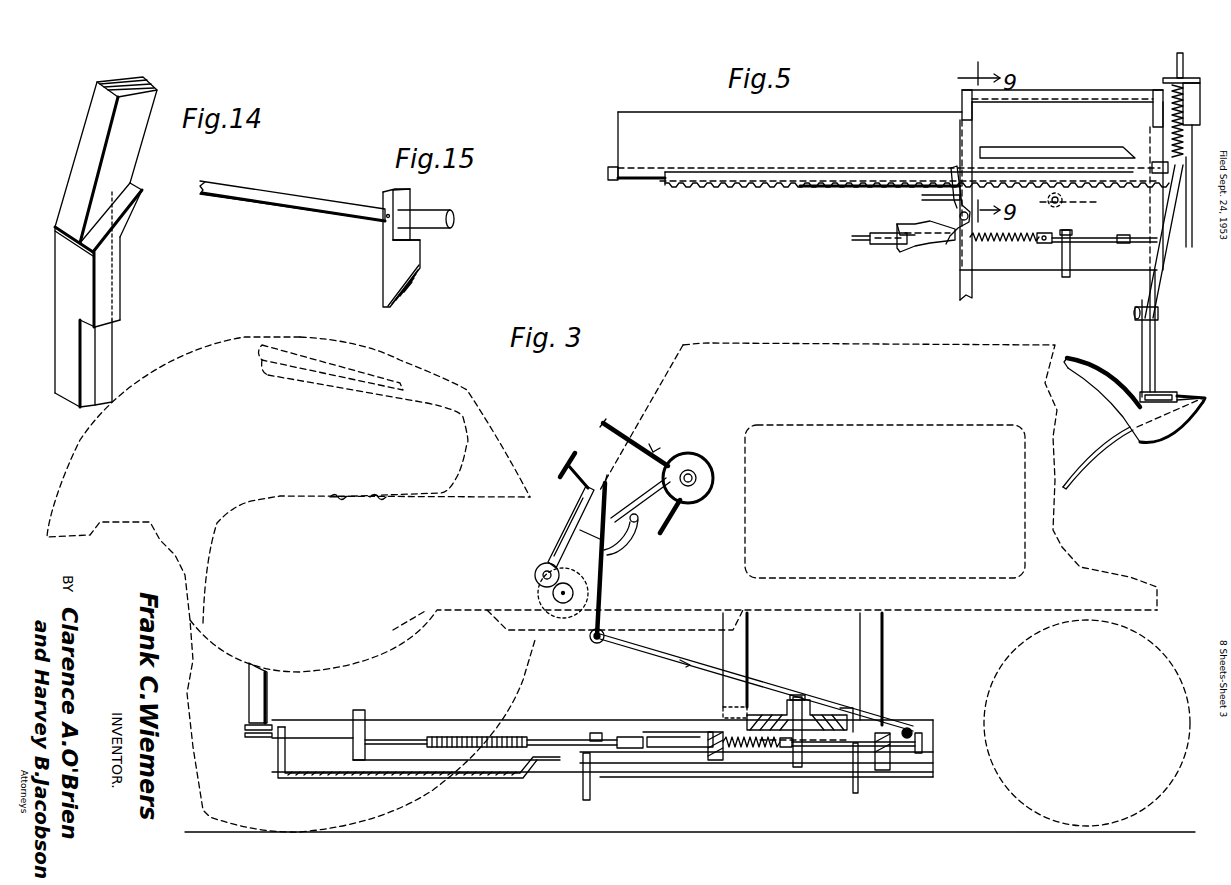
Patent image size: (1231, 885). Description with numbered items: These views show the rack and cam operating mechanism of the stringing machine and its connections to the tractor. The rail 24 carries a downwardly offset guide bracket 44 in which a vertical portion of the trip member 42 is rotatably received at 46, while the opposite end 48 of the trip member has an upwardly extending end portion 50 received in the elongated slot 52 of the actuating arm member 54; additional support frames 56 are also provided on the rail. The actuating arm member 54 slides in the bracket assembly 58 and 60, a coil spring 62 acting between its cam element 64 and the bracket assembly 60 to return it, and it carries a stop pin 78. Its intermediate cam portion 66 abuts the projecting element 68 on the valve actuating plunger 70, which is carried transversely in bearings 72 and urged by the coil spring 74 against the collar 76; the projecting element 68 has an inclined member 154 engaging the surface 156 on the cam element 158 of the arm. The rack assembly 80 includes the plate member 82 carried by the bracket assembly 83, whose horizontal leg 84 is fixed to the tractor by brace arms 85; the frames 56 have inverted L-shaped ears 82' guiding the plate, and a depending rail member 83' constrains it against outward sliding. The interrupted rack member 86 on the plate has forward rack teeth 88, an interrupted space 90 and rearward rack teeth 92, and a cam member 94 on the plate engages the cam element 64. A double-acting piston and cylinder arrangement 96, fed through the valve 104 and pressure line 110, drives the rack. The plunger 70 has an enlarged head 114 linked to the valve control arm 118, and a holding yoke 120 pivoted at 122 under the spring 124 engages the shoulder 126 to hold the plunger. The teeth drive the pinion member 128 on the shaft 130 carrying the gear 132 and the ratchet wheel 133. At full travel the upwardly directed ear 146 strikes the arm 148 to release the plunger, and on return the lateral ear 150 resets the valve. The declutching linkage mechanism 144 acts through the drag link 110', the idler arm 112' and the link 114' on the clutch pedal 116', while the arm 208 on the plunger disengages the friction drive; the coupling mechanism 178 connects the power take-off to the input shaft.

In FIG. 5, the rail 24 is at (1094, 370).
In FIG. 5, the trip member 42 is at (1094, 472).
In FIG. 5, the guide bracket 44 is at (1170, 440).
In FIG. 5, the rotatably received portion 46 is at (1188, 420).
In FIG. 5, the opposite end of trip member 48 is at (1192, 396).
In FIG. 5, the upwardly extending end portion 50 is at (1165, 394).
In FIG. 5, the elongated slot 52 is at (1138, 393).
In FIG. 14, the actuating arm member 54 is at (75, 189).
In FIG. 5, the actuating arm member 54 is at (1153, 357).
In FIG. 3, the actuating arm member 54 is at (908, 727).
In FIG. 5, the support frames 56 is at (960, 295).
In FIG. 3, the support frames 56 is at (712, 758).
In FIG. 5, the bracket assembly 58 is at (1158, 312).
In FIG. 5, the bracket assembly 60 is at (1195, 78).
In FIG. 5, the coil spring 62 is at (1170, 138).
In FIG. 5, the cam element 64 is at (1152, 168).
In FIG. 5, the intermediate cam portion 66 is at (1189, 240).
In FIG. 15, the projecting element 68 is at (392, 257).
In FIG. 5, the projecting element 68 is at (1160, 235).
In FIG. 3, the projecting element 68 is at (884, 770).
In FIG. 15, the valve actuating plunger 70 is at (308, 207).
In FIG. 5, the valve actuating plunger 70 is at (1090, 246).
In FIG. 3, the valve actuating plunger 70 is at (830, 748).
In FIG. 5, the bearing 72 is at (978, 241).
In FIG. 5, the coil spring 74 is at (1045, 245).
In FIG. 3, the coil spring 74 is at (742, 750).
In FIG. 5, the collar 76 is at (1067, 232).
In FIG. 3, the collar 76 is at (790, 752).
In FIG. 5, the stop pin 78 is at (1168, 78).
In FIG. 5, the rack assembly 80 is at (825, 190).
In FIG. 3, the rack assembly 80 is at (582, 737).
In FIG. 5, the plate member 82 is at (872, 145).
In FIG. 3, the plate member 82 is at (396, 717).
In FIG. 5, the inverted L-shaped ears 82' is at (1041, 114).
In FIG. 5, the bracket assembly 83 is at (1080, 160).
In FIG. 3, the depending rail member 83' is at (419, 770).
In FIG. 5, the horizontal leg 84 is at (1032, 88).
In FIG. 3, the brace arms 85 is at (748, 645).
In FIG. 5, the interrupted rack member 86 is at (792, 176).
In FIG. 5, the forward rack teeth 88 is at (992, 188).
In FIG. 5, the interrupted space 90 is at (857, 187).
In FIG. 3, the interrupted space 90 is at (544, 737).
In FIG. 5, the rearward rack teeth 92 is at (722, 188).
In FIG. 3, the rearward rack teeth 92 is at (505, 735).
In FIG. 5, the cam member 94 is at (989, 147).
In FIG. 3, the double-acting piston and cylinder arrangement 96 is at (463, 735).
In FIG. 3, the valve 104 is at (592, 765).
In FIG. 3, the pressure line 110 is at (589, 717).
In FIG. 3, the drag link 110' is at (756, 682).
In FIG. 3, the idler arm 112' is at (605, 559).
In FIG. 5, the enlarged head 114 is at (879, 251).
In FIG. 3, the enlarged head 114 is at (639, 772).
In FIG. 3, the link 114' is at (638, 500).
In FIG. 3, the clutch pedal 116' is at (557, 520).
In FIG. 3, the valve control arm 118 is at (600, 733).
In FIG. 5, the holding yoke 120 is at (930, 244).
In FIG. 3, the holding yoke 120 is at (672, 731).
In FIG. 5, the pivotal axis 122 is at (958, 216).
In FIG. 5, the spring 124 is at (922, 197).
In FIG. 5, the shoulder 126 is at (910, 247).
In FIG. 5, the pinion member 128 is at (1081, 202).
In FIG. 3, the pinion member 128 is at (780, 715).
In FIG. 5, the shaft 130 is at (1049, 205).
In FIG. 3, the shaft 130 is at (798, 700).
In FIG. 3, the gear 132 is at (855, 708).
In FIG. 3, the ratchet wheel 133 is at (811, 700).
In FIG. 3, the declutching linkage mechanism 144 is at (612, 582).
In FIG. 5, the upwardly directed ear 146 is at (612, 182).
In FIG. 5, the arm 148 is at (955, 178).
In FIG. 5, the lateral ear 150 is at (1138, 187).
In FIG. 15, the inclined member 154 is at (405, 291).
In FIG. 14, the surface 156 is at (113, 220).
In FIG. 14, the cam element 158 is at (117, 262).
In FIG. 3, the coupling mechanism 178 is at (706, 452).
In FIG. 5, the arm 208 is at (1064, 264).
In FIG. 3, the arm 208 is at (855, 775).